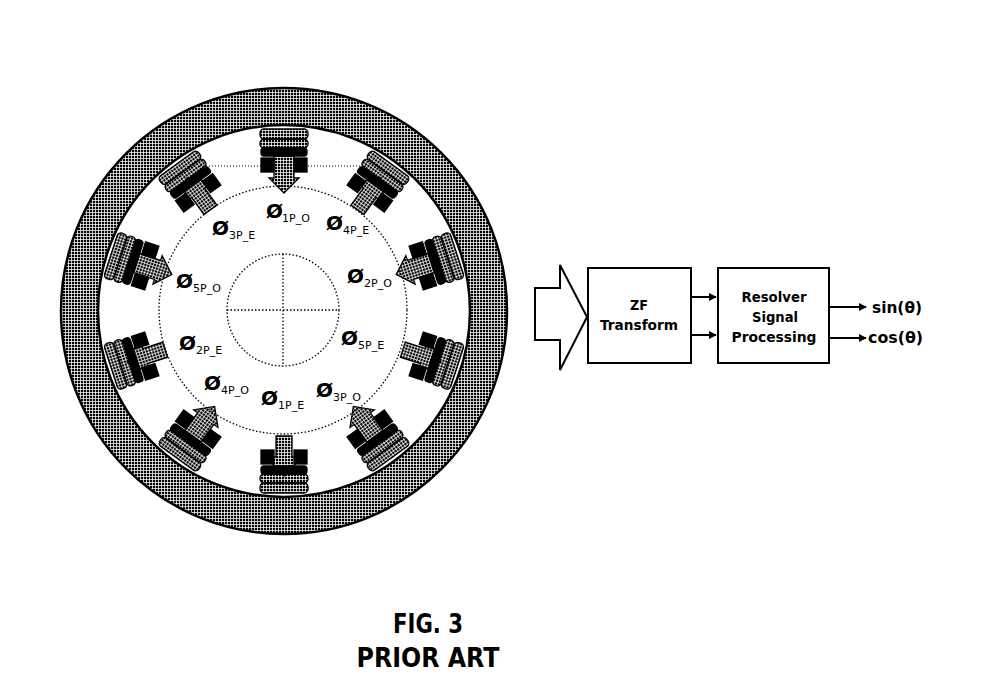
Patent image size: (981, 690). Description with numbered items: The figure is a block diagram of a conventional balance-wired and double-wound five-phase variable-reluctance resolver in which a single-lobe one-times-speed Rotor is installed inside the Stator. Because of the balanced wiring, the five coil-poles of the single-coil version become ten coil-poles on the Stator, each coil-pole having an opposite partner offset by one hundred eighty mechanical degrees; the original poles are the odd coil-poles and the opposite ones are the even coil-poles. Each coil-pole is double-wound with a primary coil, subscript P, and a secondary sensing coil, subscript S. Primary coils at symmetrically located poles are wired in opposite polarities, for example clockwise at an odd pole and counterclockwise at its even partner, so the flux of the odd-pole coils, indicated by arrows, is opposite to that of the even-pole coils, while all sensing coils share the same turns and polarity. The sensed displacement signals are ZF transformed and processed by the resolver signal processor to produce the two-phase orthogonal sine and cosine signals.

The stator Stator is at (336, 118).
The 1× speed rotor Rotor is at (350, 257).